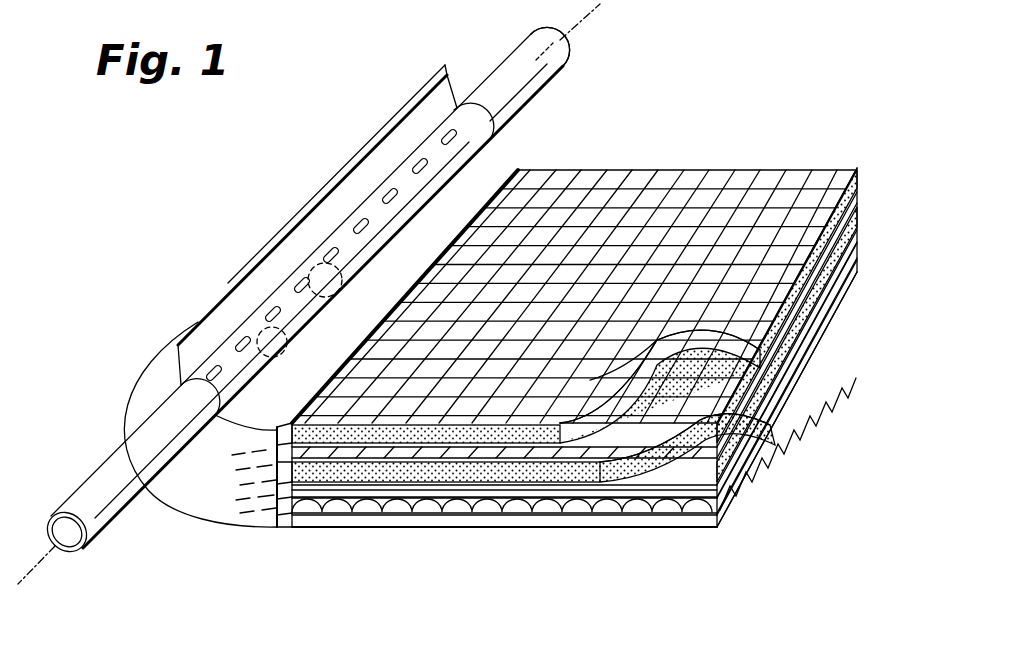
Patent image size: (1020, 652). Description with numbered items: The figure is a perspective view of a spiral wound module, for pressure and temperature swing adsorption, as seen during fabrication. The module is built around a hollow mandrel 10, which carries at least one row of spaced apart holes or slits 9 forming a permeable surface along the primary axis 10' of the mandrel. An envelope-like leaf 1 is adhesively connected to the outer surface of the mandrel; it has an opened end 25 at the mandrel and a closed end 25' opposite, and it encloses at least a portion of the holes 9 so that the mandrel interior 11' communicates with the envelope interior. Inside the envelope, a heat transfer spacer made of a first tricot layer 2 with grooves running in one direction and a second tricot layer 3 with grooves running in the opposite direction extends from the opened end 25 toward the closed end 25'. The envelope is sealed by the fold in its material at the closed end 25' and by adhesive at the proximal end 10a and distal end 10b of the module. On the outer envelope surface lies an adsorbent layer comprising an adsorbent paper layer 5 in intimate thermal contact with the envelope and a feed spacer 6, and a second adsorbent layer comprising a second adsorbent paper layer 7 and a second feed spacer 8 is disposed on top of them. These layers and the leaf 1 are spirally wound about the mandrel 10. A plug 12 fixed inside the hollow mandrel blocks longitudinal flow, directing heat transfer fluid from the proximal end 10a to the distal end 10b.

The envelope-like leaf 1 is at (624, 500).
The first tricot layer 2 is at (697, 512).
The second tricot layer 3 is at (720, 507).
The adsorbent paper layer 5 is at (855, 240).
The feed spacer 6 is at (852, 253).
The second adsorbent paper layer 7 is at (852, 190).
The second feed spacer 8 is at (793, 170).
The holes or slits 9 is at (400, 193).
The hollow mandrel 10 is at (310, 278).
The primary axis 10' is at (605, 22).
The proximal end 10a is at (128, 513).
The distal end 10b is at (555, 84).
The mandrel interior 11' is at (67, 573).
The plug 12 is at (290, 288).
The opened end 25 is at (336, 241).
The closed end 25' is at (794, 347).